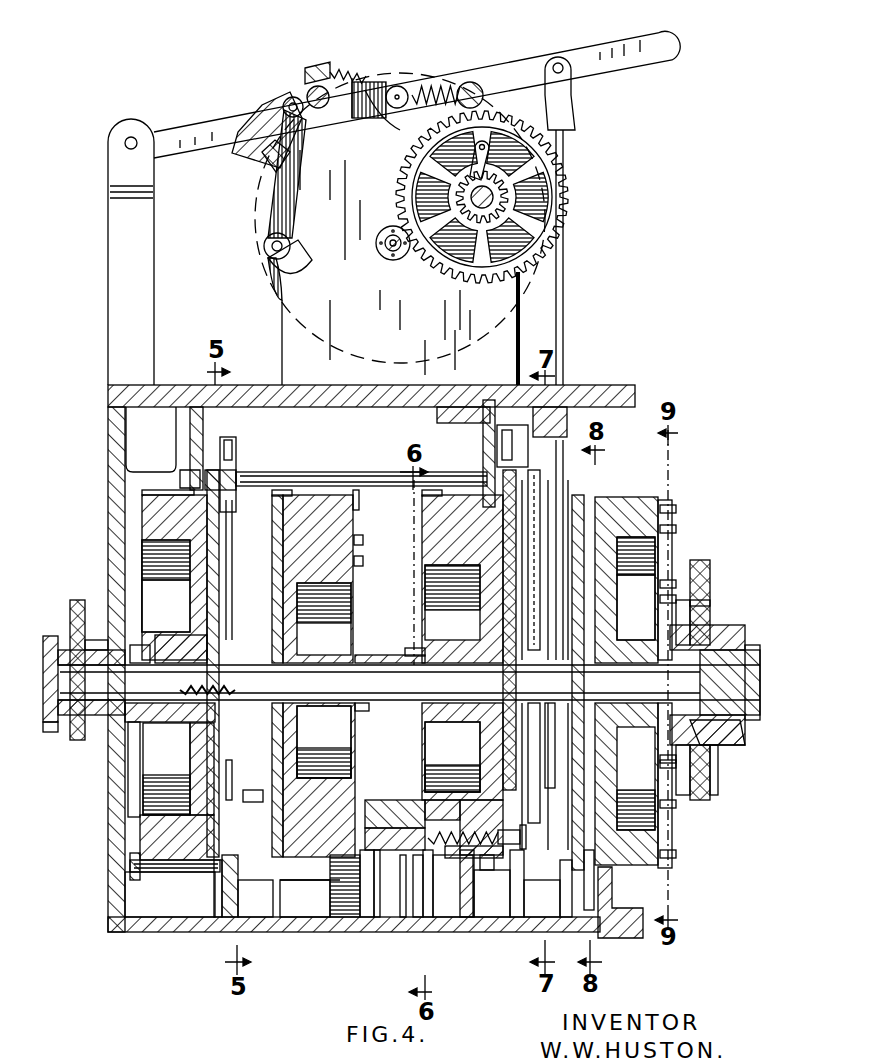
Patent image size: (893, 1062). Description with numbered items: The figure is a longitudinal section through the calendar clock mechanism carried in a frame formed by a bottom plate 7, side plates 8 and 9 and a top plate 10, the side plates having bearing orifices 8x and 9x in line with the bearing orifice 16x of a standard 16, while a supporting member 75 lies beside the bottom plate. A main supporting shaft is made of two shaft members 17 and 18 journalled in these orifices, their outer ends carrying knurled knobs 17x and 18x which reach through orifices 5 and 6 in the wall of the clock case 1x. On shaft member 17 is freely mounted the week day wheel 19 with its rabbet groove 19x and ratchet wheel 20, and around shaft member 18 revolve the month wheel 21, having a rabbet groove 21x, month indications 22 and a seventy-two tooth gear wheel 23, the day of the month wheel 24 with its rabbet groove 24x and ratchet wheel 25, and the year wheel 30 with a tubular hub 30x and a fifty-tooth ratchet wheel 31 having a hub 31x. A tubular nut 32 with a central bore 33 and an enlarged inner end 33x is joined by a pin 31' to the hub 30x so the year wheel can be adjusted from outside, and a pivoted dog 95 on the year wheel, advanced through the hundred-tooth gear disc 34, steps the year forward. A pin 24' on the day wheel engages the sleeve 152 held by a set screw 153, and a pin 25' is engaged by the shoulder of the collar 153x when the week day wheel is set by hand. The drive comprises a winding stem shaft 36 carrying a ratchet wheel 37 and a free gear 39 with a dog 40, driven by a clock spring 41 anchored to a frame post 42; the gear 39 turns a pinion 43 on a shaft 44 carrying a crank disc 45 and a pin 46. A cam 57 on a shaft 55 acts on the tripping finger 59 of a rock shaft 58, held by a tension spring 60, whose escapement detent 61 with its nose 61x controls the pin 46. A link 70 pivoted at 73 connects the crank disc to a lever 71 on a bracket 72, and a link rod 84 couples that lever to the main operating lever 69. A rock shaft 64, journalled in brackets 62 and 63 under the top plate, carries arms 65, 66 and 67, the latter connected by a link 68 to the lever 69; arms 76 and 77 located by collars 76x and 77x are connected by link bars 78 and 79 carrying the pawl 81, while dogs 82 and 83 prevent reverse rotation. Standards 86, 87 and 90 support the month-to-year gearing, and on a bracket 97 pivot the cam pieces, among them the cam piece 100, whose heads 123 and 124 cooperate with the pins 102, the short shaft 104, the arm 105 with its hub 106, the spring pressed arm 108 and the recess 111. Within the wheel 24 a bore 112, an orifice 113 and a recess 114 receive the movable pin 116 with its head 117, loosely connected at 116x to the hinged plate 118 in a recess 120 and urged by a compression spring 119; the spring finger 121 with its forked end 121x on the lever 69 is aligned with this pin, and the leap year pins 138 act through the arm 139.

The cross-hatched plate 1x is at (72, 605).
The shaft end 5 is at (60, 730).
The cross-hatched member 6 is at (712, 785).
The bottom plate 7 is at (120, 930).
The side wall 8 is at (108, 888).
The hatched band 8x is at (118, 740).
The section line 9 is at (612, 903).
The cavity 9x is at (636, 607).
The base plate 10 is at (108, 398).
The member 16 is at (218, 905).
The hatched block 16x is at (190, 645).
The coil 17 is at (165, 745).
The shaft collar 17x is at (40, 636).
The bearing block 18 is at (730, 640).
The bearing 18x is at (752, 686).
The block 19 is at (155, 514).
The plate 19x is at (170, 490).
The coil 20 is at (185, 545).
The block 21 is at (312, 495).
The plate 21x is at (278, 490).
The block 22 is at (355, 780).
The coil 23 is at (340, 580).
The block 24 is at (462, 560).
The plate 24x is at (430, 500).
The member 24' is at (399, 618).
The rod 25 is at (579, 650).
The member 25' is at (152, 627).
The plate 30 is at (670, 868).
The cross-hatched block 30x is at (710, 580).
The block 31 is at (658, 580).
The stud 31x is at (676, 607).
The member 31' is at (710, 612).
The member 32 is at (720, 745).
The collar 33 is at (752, 716).
The stud 33x is at (676, 748).
The dashed circle 34 is at (288, 350).
The small gear 36 is at (505, 195).
The hub 37 is at (500, 205).
The gear 39 is at (545, 168).
The pawl 40 is at (518, 140).
The arc 41 is at (440, 128).
The pin 42 is at (478, 86).
The wheel 43 is at (396, 262).
The pin 44 is at (386, 250).
The arm 45 is at (274, 295).
The pin 46 is at (328, 92).
The pivot 55 is at (266, 252).
The cam 57 is at (300, 250).
The pivot 58 is at (286, 100).
The link 59 is at (288, 190).
The member 60 is at (322, 66).
The lever 61 is at (262, 108).
The member 61x is at (356, 90).
The plate 62 is at (195, 405).
The bracket 63 is at (498, 420).
The rod 64 is at (326, 472).
The cylinder 65 is at (236, 478).
The plate 66 is at (470, 405).
The plate 67 is at (600, 452).
The wall 68 is at (600, 520).
The plate 69 is at (648, 580).
The block 70 is at (372, 84).
The lever 71 is at (672, 48).
The arm 72 is at (118, 288).
The pin 73 is at (400, 86).
The member 75 is at (160, 905).
The rod 76 is at (210, 872).
The nut 76x is at (140, 875).
The member 77 is at (492, 870).
The member 77x is at (468, 860).
The member 78 is at (145, 560).
The rod 79 is at (566, 480).
The plate 81 is at (231, 663).
The bracket 82 is at (190, 470).
The rod 83 is at (590, 385).
The rod 84 is at (565, 288).
The bracket 86 is at (292, 915).
The member 87 is at (516, 880).
The plate 90 is at (604, 930).
The stud 95 is at (676, 508).
The member 97 is at (385, 860).
The member 100 is at (390, 835).
The contact 102 is at (360, 536).
The member 104 is at (322, 870).
The member 105 is at (358, 900).
The member 106 is at (390, 800).
The member 108 is at (256, 792).
The coil 111 is at (325, 760).
The member 112 is at (455, 870).
The member 113 is at (522, 870).
The member 114 is at (586, 890).
The spring 116 is at (505, 830).
The member 116x is at (468, 800).
The pin 117 is at (526, 838).
The coil 118 is at (445, 800).
The member 119 is at (420, 860).
The block 120 is at (452, 770).
The rod 121 is at (540, 780).
The stud 121x is at (680, 818).
The member 123 is at (377, 870).
The member 124 is at (402, 870).
The stud 138 is at (676, 528).
The member 139 is at (228, 915).
The plate 152 is at (385, 656).
The member 153 is at (368, 712).
The member 153x is at (128, 760).